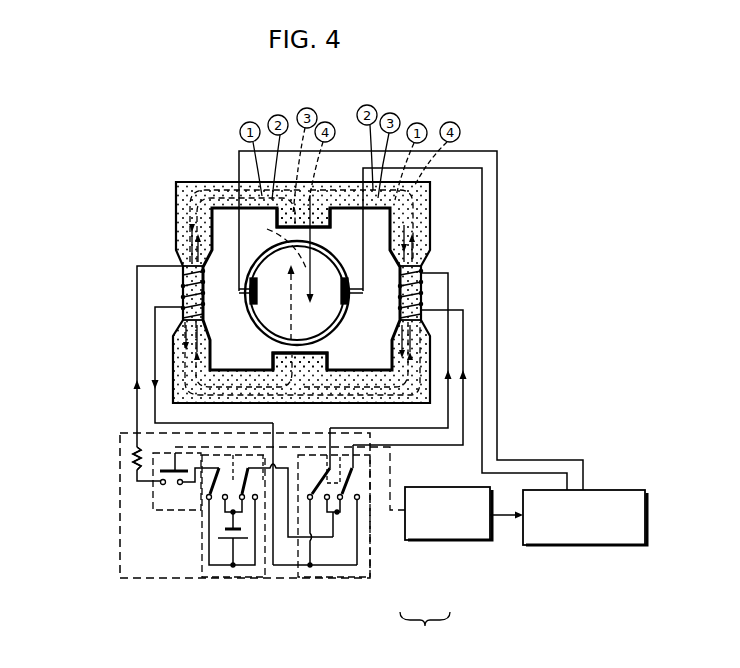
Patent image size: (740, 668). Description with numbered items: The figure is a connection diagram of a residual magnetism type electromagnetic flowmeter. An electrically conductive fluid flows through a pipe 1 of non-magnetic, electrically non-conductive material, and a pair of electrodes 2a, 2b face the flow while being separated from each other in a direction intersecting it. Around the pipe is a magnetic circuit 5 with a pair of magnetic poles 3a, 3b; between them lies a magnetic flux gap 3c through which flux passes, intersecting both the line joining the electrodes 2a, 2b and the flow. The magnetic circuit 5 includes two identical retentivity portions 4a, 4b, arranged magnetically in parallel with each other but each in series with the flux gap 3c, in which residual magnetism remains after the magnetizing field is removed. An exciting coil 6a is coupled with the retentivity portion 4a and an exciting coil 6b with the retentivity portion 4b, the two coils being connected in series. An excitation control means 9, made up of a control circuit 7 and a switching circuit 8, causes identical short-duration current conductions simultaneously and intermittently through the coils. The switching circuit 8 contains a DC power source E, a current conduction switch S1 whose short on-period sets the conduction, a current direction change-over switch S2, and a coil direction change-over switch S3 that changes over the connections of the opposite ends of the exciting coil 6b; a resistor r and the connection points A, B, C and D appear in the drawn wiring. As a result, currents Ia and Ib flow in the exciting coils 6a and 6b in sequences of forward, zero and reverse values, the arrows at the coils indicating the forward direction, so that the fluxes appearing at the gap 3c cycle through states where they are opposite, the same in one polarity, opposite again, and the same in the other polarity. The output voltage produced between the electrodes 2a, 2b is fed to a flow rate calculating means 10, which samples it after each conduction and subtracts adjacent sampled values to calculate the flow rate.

The pipe 1 is at (344, 260).
The electrode 2a is at (268, 320).
The electrode 2b is at (346, 300).
The magnetic pole 3a is at (317, 222).
The magnetic pole 3b is at (325, 356).
The magnetic flux gap 3c is at (303, 305).
The retentivity portion 4a is at (184, 262).
The retentivity portion 4b is at (422, 266).
The magnetic circuit 5 is at (216, 186).
The exciting coil 6a is at (204, 290).
The exciting coil 6b is at (422, 295).
The control circuit 7 is at (440, 542).
The switching circuit 8 is at (266, 538).
The excitation control means 9 is at (432, 648).
The flow rate calculating means 10 is at (523, 545).
The current conduction switch S1 is at (165, 512).
The current direction change-over switch S2 is at (222, 580).
The coil direction change-over switch S3 is at (321, 549).
The DC power source E is at (237, 545).
The resistor r is at (116, 458).
The terminal A is at (129, 440).
The terminal B is at (281, 489).
The terminal C is at (321, 441).
The terminal D is at (384, 457).
The exciting current Ia is at (192, 373).
The exciting current Ib is at (421, 359).